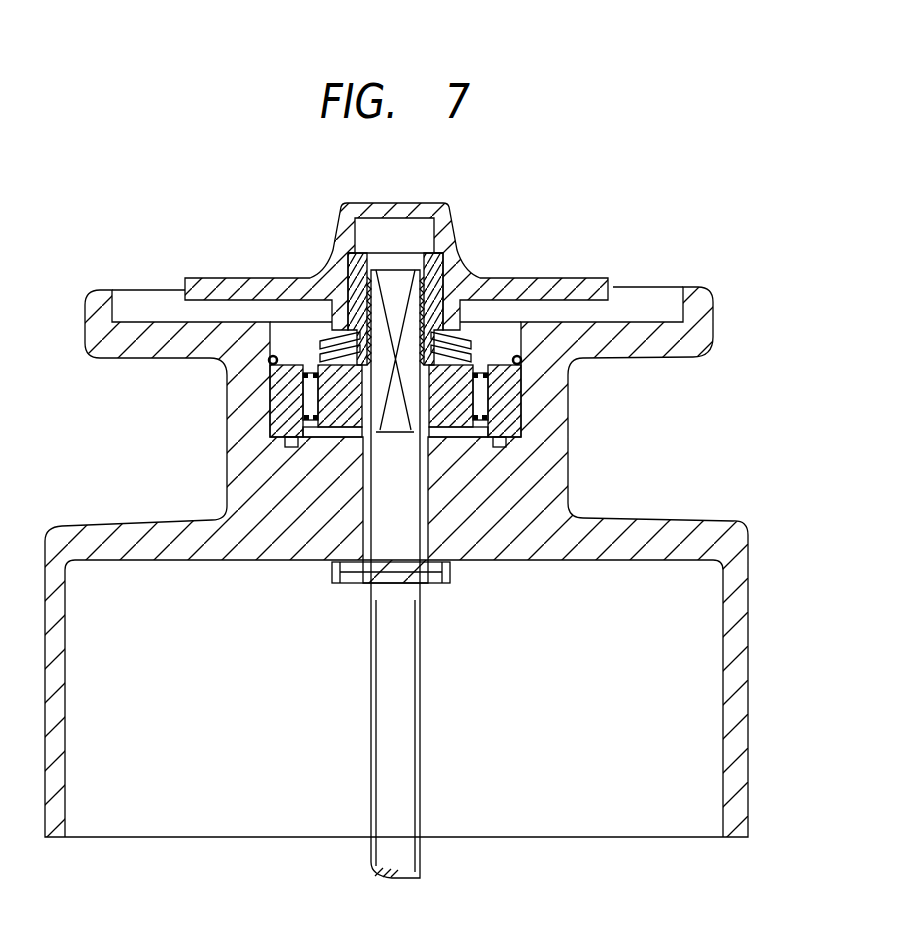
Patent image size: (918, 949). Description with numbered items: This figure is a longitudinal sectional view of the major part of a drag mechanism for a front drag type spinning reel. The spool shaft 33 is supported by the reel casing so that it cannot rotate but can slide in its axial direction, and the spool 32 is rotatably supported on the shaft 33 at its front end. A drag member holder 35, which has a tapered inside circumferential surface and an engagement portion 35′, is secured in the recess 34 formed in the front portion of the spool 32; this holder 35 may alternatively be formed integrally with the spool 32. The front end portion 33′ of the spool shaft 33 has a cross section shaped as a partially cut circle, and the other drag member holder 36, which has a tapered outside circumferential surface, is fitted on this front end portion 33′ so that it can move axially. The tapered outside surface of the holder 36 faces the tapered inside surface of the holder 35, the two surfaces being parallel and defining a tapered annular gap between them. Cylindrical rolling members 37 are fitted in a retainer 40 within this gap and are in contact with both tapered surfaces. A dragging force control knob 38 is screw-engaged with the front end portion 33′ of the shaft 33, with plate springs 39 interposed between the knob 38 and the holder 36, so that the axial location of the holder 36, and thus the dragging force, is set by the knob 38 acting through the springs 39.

The spool 32 is at (556, 494).
The spool shaft 33 is at (404, 858).
The front end portion of the spool shaft 33′ is at (403, 292).
The recess 34 is at (468, 322).
The drag member holder 35 is at (522, 406).
The engagement portion 35′ is at (505, 428).
The drag member holder 36 is at (332, 402).
The cylindrical rolling members 37 is at (304, 414).
The dragging force control knob 38 is at (272, 288).
The plate springs 39 is at (518, 354).
The retainer 40 is at (272, 378).